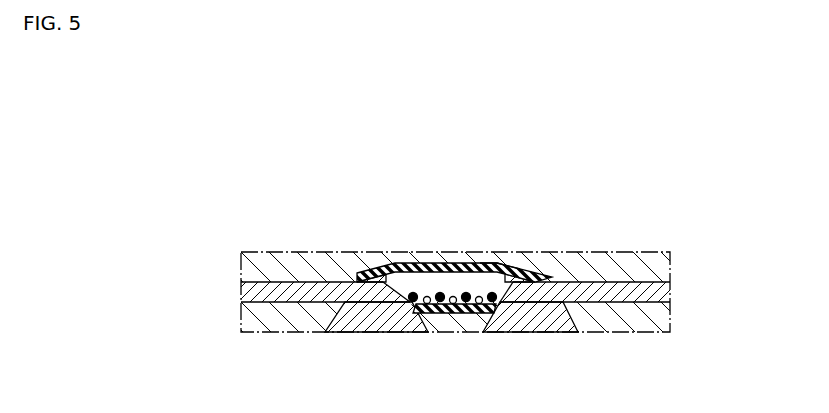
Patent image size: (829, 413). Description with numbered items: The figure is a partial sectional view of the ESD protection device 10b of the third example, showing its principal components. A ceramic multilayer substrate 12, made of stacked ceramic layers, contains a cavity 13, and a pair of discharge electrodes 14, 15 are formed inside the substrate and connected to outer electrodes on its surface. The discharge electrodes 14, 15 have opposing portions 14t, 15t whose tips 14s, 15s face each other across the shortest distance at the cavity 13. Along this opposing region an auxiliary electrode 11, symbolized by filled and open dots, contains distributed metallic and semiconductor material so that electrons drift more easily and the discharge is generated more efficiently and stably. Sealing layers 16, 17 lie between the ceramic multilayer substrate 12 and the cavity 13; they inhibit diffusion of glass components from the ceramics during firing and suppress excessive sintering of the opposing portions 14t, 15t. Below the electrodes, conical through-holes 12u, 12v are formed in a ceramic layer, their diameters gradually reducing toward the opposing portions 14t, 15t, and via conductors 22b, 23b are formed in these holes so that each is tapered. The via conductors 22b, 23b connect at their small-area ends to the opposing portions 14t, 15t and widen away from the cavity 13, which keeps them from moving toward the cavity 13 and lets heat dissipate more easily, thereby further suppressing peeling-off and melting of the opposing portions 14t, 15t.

The ESD protection device 10b is at (726, 163).
The auxiliary electrode 11 is at (442, 290).
The ceramic multilayer substrate 12 is at (455, 299).
The conical through-hole 12u is at (410, 333).
The conical through-hole 12v is at (563, 330).
The cavity 13 is at (493, 262).
The discharge electrode 14 is at (238, 290).
The tip 14s is at (408, 264).
The opposing portion 14t is at (386, 268).
The discharge electrode 15 is at (675, 291).
The tip 15s is at (521, 272).
The opposing portion 15t is at (543, 270).
The sealing layer 16 is at (443, 316).
The sealing layer 17 is at (457, 261).
The via conductor 22b is at (360, 322).
The via conductor 23b is at (515, 320).